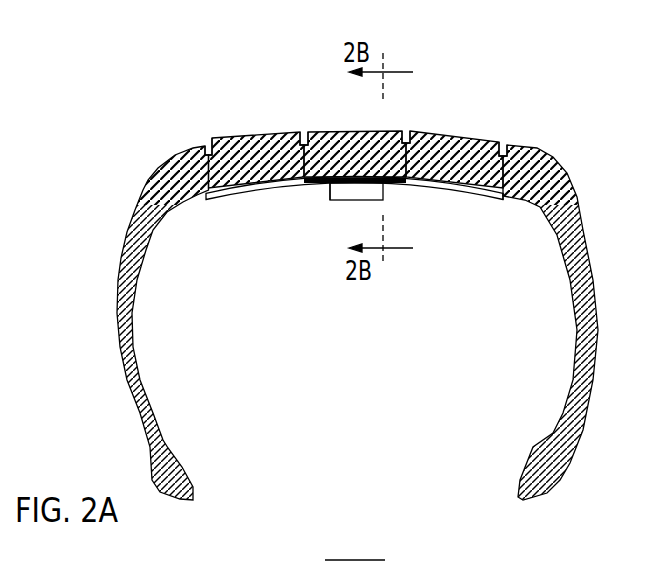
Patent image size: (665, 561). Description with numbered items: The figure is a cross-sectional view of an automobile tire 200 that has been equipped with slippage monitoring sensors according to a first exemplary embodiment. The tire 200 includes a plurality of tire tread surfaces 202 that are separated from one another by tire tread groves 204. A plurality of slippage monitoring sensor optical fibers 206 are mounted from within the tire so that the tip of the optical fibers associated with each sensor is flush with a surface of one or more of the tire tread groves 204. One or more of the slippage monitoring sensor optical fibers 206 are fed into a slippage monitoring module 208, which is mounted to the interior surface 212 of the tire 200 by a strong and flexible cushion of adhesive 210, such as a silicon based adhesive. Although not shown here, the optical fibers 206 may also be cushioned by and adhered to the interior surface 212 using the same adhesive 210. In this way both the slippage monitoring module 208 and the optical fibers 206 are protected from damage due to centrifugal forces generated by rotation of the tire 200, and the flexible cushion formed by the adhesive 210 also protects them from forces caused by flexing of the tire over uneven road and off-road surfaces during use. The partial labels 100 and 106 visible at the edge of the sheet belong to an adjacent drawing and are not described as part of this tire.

The tire 200 is at (550, 71).
The tire tread surfaces 202 is at (585, 161).
The tire tread groves 204 is at (203, 148).
The slippage monitoring sensor optical fibers 206 is at (298, 166).
The slippage monitoring module 208 is at (385, 193).
The adhesive 210 is at (330, 200).
The interior surface 212 is at (512, 197).
The headset 100 is at (0, 76).
The headset component 106 is at (9, 328).